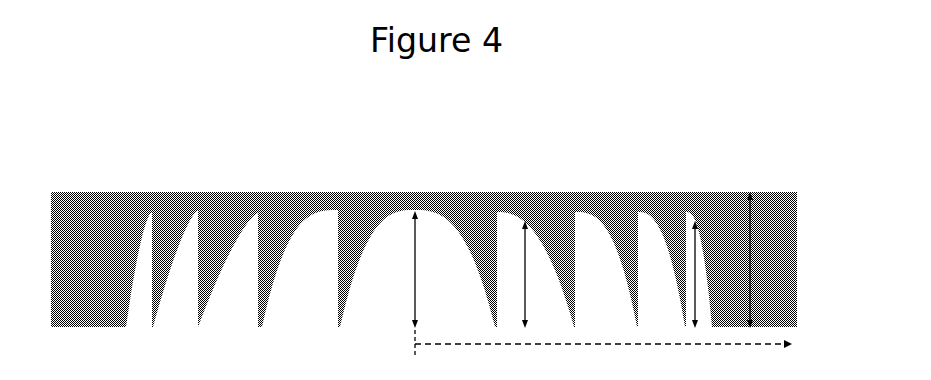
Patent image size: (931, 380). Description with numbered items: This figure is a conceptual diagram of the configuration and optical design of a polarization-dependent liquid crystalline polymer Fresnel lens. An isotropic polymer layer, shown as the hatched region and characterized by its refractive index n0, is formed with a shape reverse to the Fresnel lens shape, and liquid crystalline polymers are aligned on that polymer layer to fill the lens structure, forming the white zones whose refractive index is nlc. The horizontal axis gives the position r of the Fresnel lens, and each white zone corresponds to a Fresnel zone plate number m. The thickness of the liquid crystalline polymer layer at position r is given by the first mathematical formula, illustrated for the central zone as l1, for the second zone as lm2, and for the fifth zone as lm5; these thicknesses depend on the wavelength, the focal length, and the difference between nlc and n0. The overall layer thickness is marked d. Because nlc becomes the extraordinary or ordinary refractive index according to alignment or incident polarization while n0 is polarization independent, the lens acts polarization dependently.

The refractive index of the isotropic polymer layer n0 is at (424, 259).
The refractive index of the liquid crystalline polymer layer nlc is at (419, 268).
The thickness of the liquid crystalline polymer layer for the first Fresnel zone l1 is at (446, 269).
The thickness of the liquid crystalline polymer layer for the second Fresnel zone lm2 is at (537, 262).
The thickness of the liquid crystalline polymer layer for the fifth Fresnel zone lm5 is at (703, 248).
The layer thickness d is at (762, 260).
The position of the Fresnel lens r is at (603, 354).